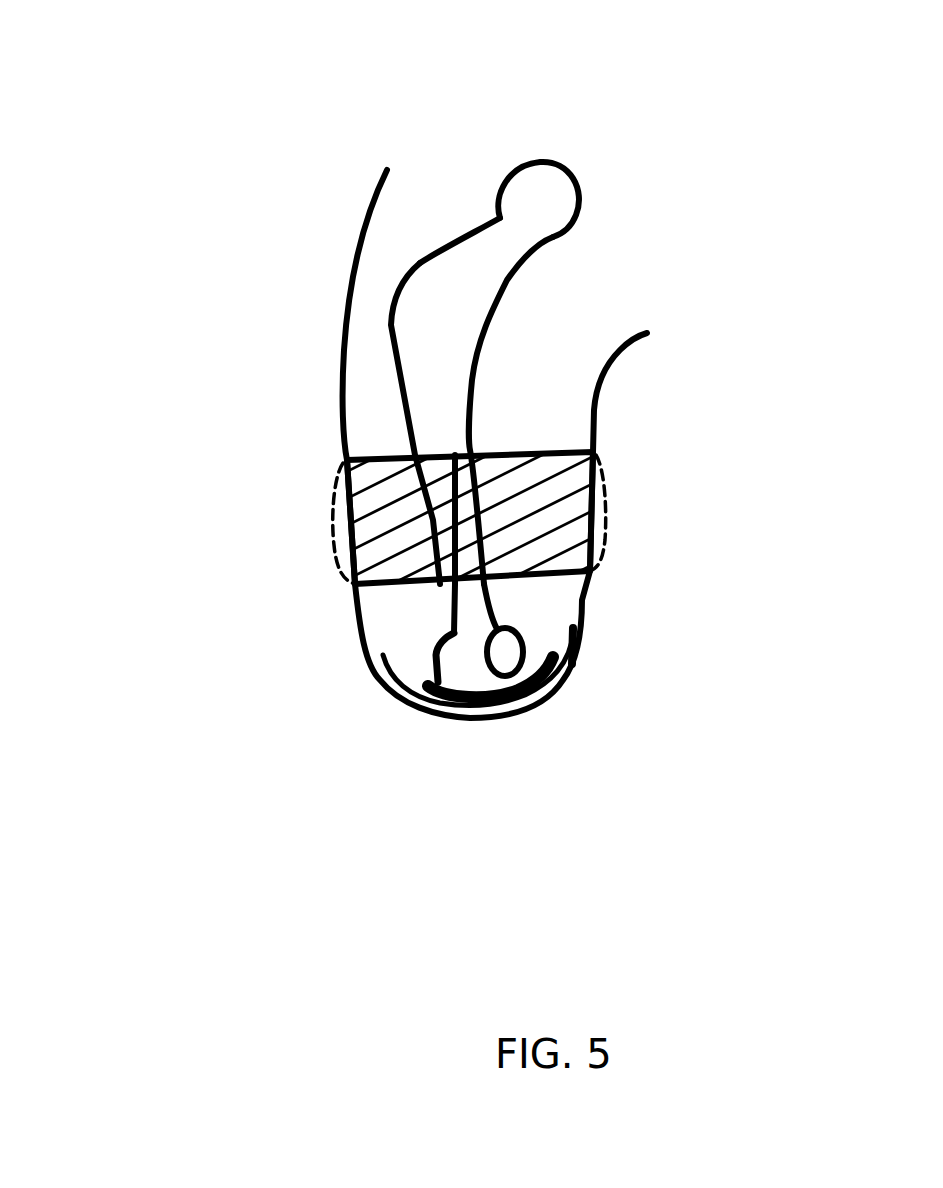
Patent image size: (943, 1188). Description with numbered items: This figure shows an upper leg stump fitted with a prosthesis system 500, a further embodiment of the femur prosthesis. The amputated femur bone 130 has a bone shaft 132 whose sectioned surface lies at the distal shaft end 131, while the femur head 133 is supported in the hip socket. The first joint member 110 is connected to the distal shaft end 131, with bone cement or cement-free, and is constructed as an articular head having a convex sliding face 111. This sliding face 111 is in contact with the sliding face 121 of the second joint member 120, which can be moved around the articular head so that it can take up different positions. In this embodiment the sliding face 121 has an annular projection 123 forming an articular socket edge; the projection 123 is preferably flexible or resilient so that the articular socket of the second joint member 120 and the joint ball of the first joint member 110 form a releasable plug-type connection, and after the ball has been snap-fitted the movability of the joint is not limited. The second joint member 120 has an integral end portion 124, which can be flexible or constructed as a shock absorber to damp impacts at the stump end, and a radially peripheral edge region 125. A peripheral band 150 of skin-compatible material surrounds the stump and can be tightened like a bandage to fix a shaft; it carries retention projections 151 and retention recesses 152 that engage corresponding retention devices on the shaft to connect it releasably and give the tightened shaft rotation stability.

The prosthesis system 500 is at (283, 152).
The first joint member 110 is at (433, 648).
The convex sliding face 111 is at (503, 637).
The second joint member 120 is at (578, 662).
The sliding face 121 is at (495, 697).
The annular projection 123 is at (383, 672).
The end portion 124 is at (513, 703).
The radially peripheral edge region 125 is at (580, 640).
The femur bone 130 is at (437, 287).
The distal shaft end 131 is at (478, 624).
The bone shaft 132 is at (433, 390).
The femur head 133 is at (560, 193).
The peripheral band 150 is at (397, 497).
The retention projections 151 is at (417, 457).
The retention recesses 152 is at (603, 480).